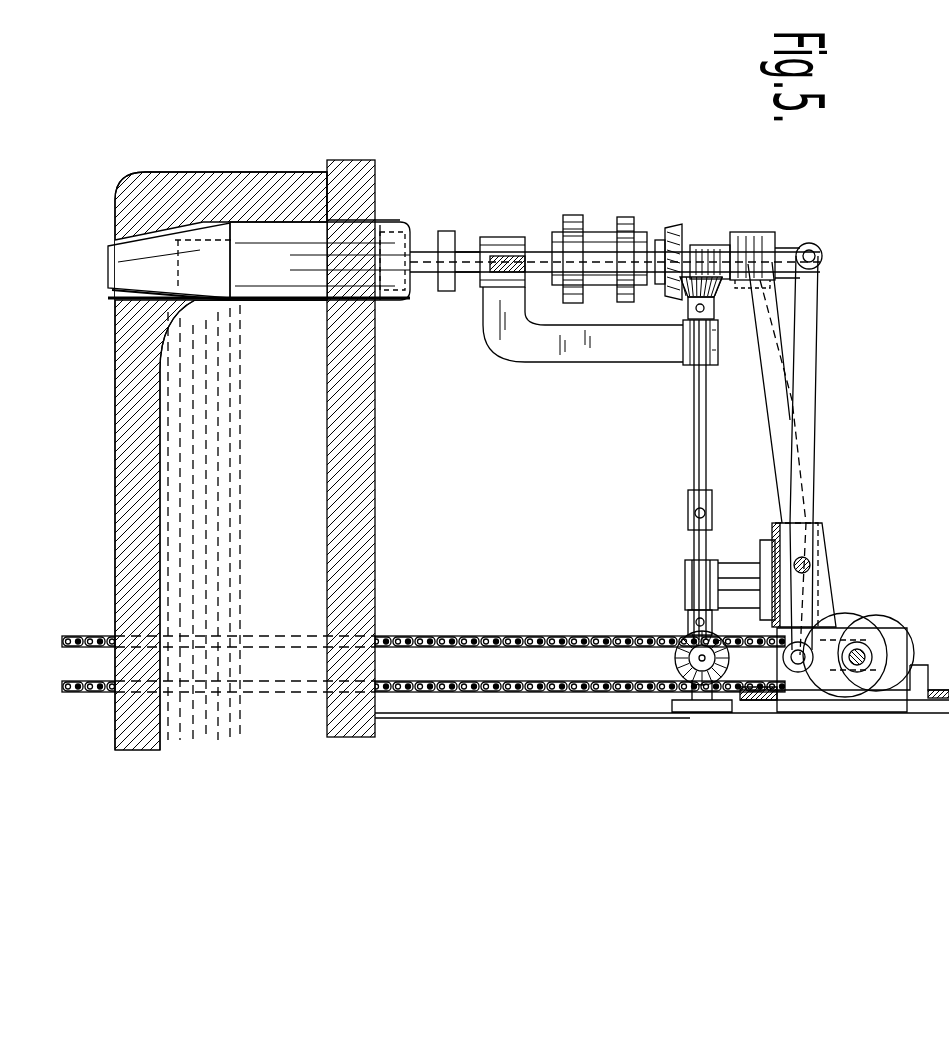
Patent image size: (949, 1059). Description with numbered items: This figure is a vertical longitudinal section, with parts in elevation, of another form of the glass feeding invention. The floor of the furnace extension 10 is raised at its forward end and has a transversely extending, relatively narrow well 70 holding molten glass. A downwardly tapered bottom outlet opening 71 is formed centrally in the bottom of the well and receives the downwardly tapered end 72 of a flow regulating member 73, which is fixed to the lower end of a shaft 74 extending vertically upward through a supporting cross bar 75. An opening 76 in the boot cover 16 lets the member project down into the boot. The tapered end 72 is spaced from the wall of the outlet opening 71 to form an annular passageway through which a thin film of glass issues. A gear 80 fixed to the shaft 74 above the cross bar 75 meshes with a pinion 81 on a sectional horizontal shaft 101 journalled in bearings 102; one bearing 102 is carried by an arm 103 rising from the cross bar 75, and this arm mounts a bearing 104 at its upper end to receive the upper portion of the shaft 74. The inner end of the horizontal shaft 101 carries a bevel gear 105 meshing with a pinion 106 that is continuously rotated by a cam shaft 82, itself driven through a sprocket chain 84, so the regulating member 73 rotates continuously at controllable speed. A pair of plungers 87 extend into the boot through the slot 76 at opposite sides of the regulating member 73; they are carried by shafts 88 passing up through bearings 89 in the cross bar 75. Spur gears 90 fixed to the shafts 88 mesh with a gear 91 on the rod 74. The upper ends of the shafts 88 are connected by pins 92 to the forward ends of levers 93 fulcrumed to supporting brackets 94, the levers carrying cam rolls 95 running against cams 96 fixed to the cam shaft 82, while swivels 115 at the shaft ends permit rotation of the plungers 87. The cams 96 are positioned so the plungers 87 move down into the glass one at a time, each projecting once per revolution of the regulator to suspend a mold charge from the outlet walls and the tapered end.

The furnace extension 10 is at (118, 470).
The boot cover 16 is at (376, 455).
The well 70 is at (216, 296).
The bottom outlet opening 71 is at (112, 290).
The tapered end 72 is at (112, 252).
The flow regulating member 73 is at (393, 298).
The shaft 74 is at (714, 244).
The supporting cross bar 75 is at (500, 256).
The opening 76 is at (372, 216).
The gear 80 is at (676, 225).
The pinion 81 is at (682, 295).
The cam shaft 82 is at (860, 655).
The sprocket chain 84 is at (450, 636).
The plungers 87 is at (448, 291).
The shafts 88 is at (466, 273).
The bearings 89 is at (486, 240).
The spur gears 90 is at (620, 217).
The gear 91 is at (600, 232).
The pins 92 is at (813, 243).
The levers 93 is at (818, 355).
The supporting brackets 94 is at (825, 560).
The cam rolls 95 is at (784, 660).
The cams 96 is at (848, 618).
The horizontal shaft 101 is at (694, 455).
The bearings 102 is at (686, 583).
The arm 103 is at (608, 362).
The bearing 104 is at (748, 232).
The bevel gear 105 is at (690, 632).
The pinion 106 is at (676, 658).
The swivels 115 is at (666, 240).